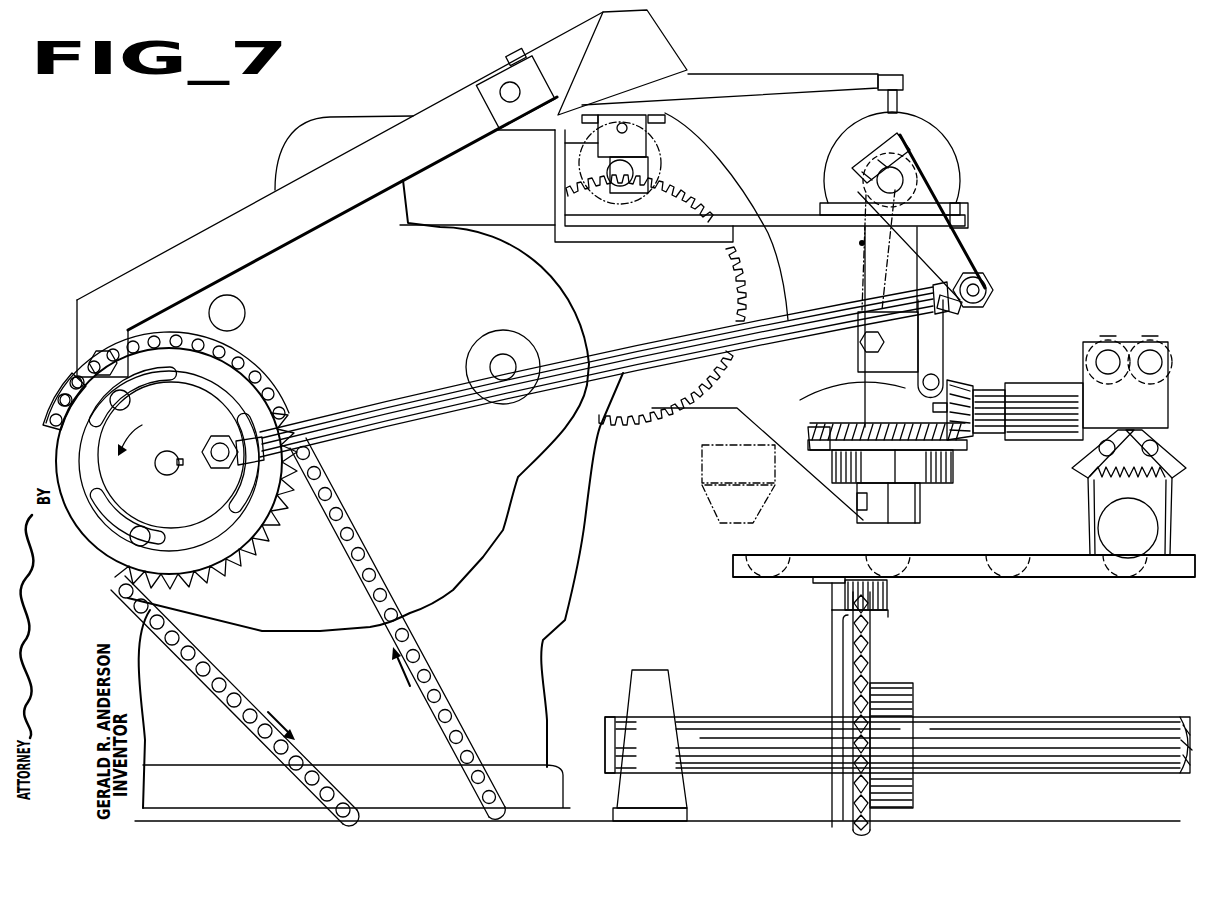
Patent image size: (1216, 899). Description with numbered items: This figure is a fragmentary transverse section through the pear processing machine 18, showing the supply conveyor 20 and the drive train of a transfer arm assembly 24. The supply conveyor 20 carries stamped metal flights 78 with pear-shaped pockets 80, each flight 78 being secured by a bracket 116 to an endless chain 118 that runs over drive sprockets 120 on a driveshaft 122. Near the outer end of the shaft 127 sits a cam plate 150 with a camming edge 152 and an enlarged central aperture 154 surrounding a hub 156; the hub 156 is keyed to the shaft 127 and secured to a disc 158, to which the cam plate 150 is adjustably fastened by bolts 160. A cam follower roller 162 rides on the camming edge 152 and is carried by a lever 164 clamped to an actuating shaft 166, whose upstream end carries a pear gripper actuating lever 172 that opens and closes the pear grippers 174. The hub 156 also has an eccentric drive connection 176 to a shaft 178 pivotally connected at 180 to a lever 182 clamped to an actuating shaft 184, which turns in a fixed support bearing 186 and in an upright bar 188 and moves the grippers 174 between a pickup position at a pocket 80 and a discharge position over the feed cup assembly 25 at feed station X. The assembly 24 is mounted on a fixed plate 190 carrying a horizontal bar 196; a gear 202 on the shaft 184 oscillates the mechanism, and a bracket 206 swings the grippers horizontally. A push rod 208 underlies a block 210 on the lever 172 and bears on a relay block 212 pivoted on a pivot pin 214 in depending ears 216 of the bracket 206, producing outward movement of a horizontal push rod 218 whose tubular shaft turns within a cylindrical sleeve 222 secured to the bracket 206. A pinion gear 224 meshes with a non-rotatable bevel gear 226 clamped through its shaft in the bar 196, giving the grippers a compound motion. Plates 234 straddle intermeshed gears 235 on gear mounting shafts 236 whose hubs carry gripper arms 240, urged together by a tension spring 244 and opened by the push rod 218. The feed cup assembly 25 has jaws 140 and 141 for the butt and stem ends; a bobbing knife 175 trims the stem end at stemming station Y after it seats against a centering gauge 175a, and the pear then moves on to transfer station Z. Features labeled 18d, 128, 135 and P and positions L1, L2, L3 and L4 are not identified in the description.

The pear processing machine 18 is at (414, 278).
The housing lobe 18d is at (280, 162).
The supply conveyor 20 is at (1112, 584).
The transfer arm assembly 24 is at (1178, 343).
The feed cup assembly 25 is at (698, 487).
The supply conveyor flight 78 is at (962, 579).
The concave pocket 80 is at (748, 578).
The bracket 116 is at (843, 593).
The endless chain 118 is at (882, 593).
The drive sprocket 120 is at (872, 640).
The driveshaft 122 is at (1007, 720).
The shaft 127 is at (170, 474).
The drive chain 128 is at (428, 643).
The gear segment 135 is at (610, 431).
The jaws 140 is at (703, 440).
The jaws 141 is at (722, 490).
The cam plate 150 is at (213, 388).
The camming edge 152 is at (265, 540).
The enlarged central aperture 154 is at (200, 410).
The hub 156 is at (154, 496).
The disc 158 is at (203, 362).
The bolts 160 is at (92, 440).
The cam follower roller 162 is at (78, 380).
The lever 164 is at (236, 260).
The actuating shaft 166 is at (502, 84).
The pear gripper actuating lever 172 is at (718, 78).
The pear grippers 174 is at (1090, 539).
The bobbing knife 175 is at (636, 56).
The centering gauge 175a is at (645, 127).
The eccentric drive connection 176 is at (210, 446).
The shaft 178 is at (386, 432).
The pivotal connection 180 is at (990, 280).
The lever 182 is at (962, 244).
The actuating shaft 184 is at (903, 178).
The fixed support bearing 186 is at (826, 204).
The upright bar 188 is at (872, 263).
The fixed plate 190 is at (809, 378).
The horizontal bar 196 is at (870, 515).
The gear 202 is at (935, 130).
The bracket 206 is at (1008, 374).
The push rod 208 is at (900, 102).
The block 210 is at (903, 78).
The relay block 212 is at (845, 384).
The pivot pin 214 is at (943, 333).
The depending ears 216 is at (958, 310).
The push rod 218 is at (950, 442).
The cylindrical sleeve 222 is at (1045, 385).
The pinion gear 224 is at (985, 440).
The bevel gear 226 is at (828, 428).
The plate 234 is at (1149, 429).
The intermeshed gears 235 is at (1150, 342).
The gear mounting shafts 236 is at (1129, 375).
The gripper arm 240 is at (1163, 502).
The tension spring 244 is at (1100, 487).
The pulley P is at (1140, 546).
The feed station X is at (730, 522).
The stemming station Y is at (660, 150).
The transfer station Z is at (510, 332).
The position L1 is at (794, 518).
The position L2 is at (897, 547).
The position L3 is at (999, 546).
The position L4 is at (1145, 584).